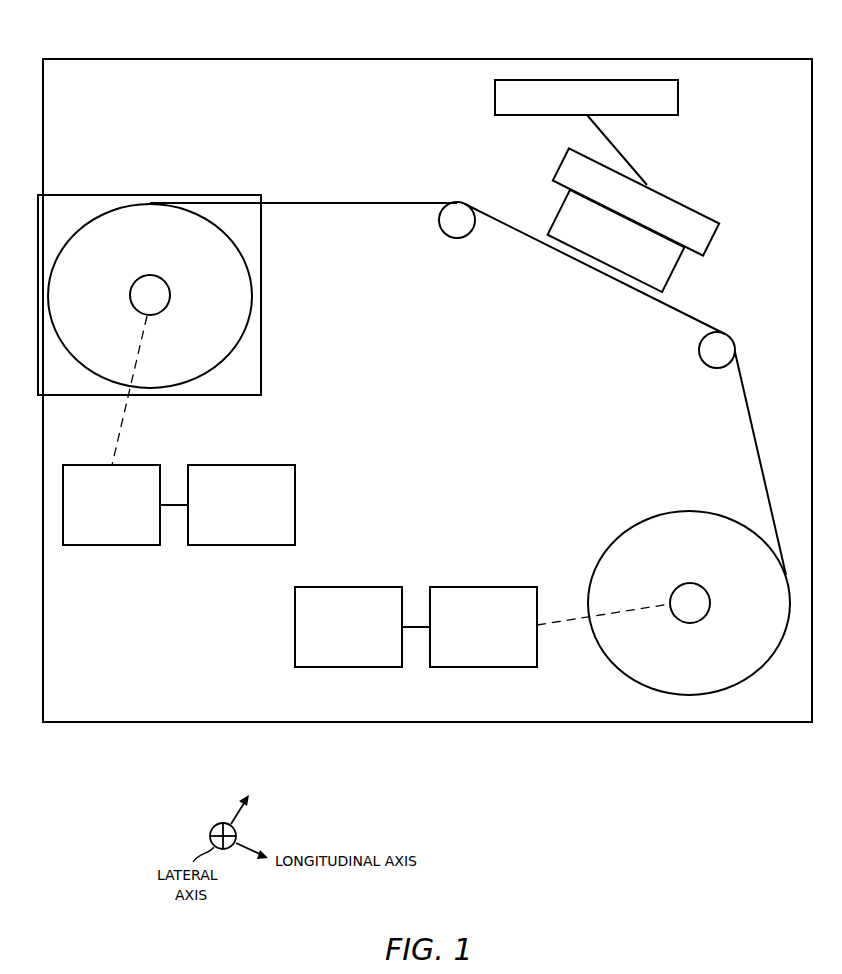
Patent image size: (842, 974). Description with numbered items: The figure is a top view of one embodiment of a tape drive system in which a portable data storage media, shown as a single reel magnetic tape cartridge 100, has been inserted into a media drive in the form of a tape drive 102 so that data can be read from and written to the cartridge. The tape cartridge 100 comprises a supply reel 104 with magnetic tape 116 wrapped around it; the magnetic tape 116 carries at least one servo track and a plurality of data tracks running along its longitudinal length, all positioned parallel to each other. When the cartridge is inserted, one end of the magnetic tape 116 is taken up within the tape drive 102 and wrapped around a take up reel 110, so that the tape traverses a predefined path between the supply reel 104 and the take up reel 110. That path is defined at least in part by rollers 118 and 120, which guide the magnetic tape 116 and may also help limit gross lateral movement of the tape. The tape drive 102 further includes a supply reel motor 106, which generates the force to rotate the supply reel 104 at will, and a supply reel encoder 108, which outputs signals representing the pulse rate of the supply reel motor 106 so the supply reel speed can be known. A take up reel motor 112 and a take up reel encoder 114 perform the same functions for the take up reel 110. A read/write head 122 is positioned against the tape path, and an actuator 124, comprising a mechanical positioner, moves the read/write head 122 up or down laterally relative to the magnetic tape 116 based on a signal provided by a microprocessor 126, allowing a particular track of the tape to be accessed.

The magnetic tape cartridge 100 is at (120, 195).
The tape drive 102 is at (311, 57).
The supply reel 104 is at (250, 328).
The supply reel motor 106 is at (107, 547).
The supply reel encoder 108 is at (237, 547).
The take up reel 110 is at (620, 535).
The take up reel motor 112 is at (347, 669).
The take up reel encoder 114 is at (483, 669).
The magnetic tape 116 is at (352, 202).
The roller 118 is at (455, 240).
The roller 120 is at (712, 368).
The read/write head 122 is at (676, 272).
The actuator 124 is at (681, 203).
The microprocessor 126 is at (678, 96).